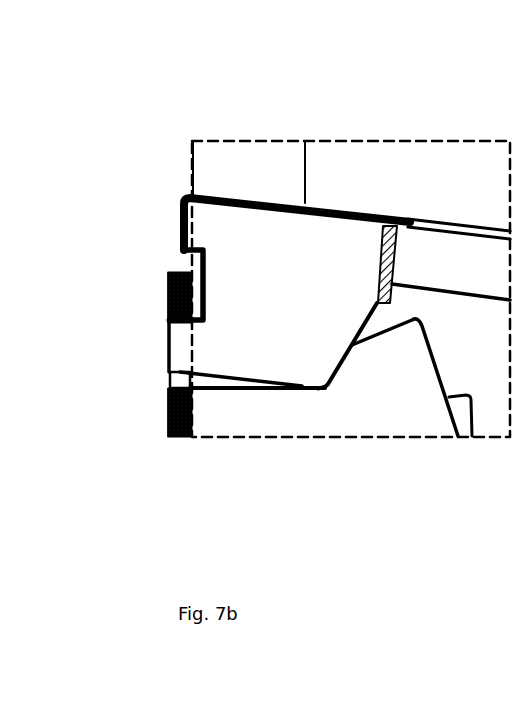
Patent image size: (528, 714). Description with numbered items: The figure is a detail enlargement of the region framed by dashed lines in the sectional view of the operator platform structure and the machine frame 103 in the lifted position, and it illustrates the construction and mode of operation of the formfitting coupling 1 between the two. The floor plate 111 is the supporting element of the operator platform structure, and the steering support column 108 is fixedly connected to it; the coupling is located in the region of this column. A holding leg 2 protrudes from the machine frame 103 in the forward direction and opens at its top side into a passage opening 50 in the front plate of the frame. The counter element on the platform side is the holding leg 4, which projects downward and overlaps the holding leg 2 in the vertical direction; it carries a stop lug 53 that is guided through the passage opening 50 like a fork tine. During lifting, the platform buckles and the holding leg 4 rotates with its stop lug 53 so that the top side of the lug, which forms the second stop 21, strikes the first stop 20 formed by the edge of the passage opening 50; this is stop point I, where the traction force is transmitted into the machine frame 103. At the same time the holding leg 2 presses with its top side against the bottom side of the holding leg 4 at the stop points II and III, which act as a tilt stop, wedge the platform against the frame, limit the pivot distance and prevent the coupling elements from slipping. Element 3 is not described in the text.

The steering support column 108 is at (228, 150).
The floor plate 111 is at (420, 220).
The element 3 is at (4, 181).
The formfitting coupling 1 is at (125, 264).
The first stop 20 is at (167, 315).
The stop point I is at (167, 322).
The second stop 21 is at (167, 326).
The stop lug 53 is at (172, 352).
The passage opening 50 is at (177, 375).
The holding leg 4 is at (250, 352).
The holding leg 2 is at (272, 415).
The stop point II is at (318, 392).
The machine frame 103 is at (367, 415).
The stop point III is at (353, 347).